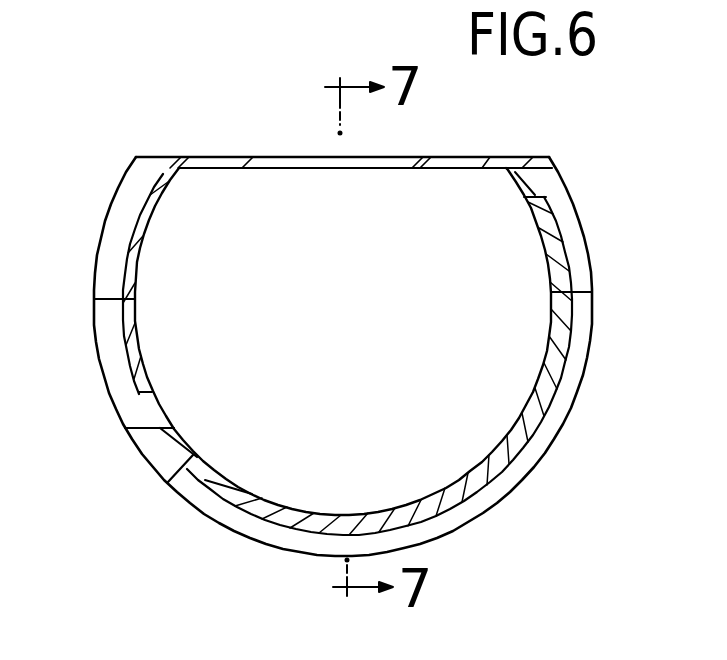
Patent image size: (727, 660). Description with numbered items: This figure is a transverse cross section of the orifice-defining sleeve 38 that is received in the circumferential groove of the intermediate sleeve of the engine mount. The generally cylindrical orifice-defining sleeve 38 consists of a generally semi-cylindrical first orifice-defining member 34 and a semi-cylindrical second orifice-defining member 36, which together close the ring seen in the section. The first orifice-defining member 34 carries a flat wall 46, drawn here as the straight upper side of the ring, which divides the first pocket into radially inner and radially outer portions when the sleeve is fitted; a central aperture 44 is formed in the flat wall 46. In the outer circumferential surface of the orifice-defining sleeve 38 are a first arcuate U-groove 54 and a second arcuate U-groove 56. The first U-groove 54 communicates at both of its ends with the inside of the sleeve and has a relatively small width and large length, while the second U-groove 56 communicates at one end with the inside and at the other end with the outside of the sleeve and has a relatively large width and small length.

The first orifice-defining member 34 is at (523, 140).
The second orifice-defining member 36 is at (140, 470).
The orifice-defining sleeve 38 is at (157, 120).
The aperture 44 is at (253, 160).
The flat wall 46 is at (458, 163).
The first arcuate U-groove 54 is at (570, 268).
The second arcuate U-groove 56 is at (125, 333).